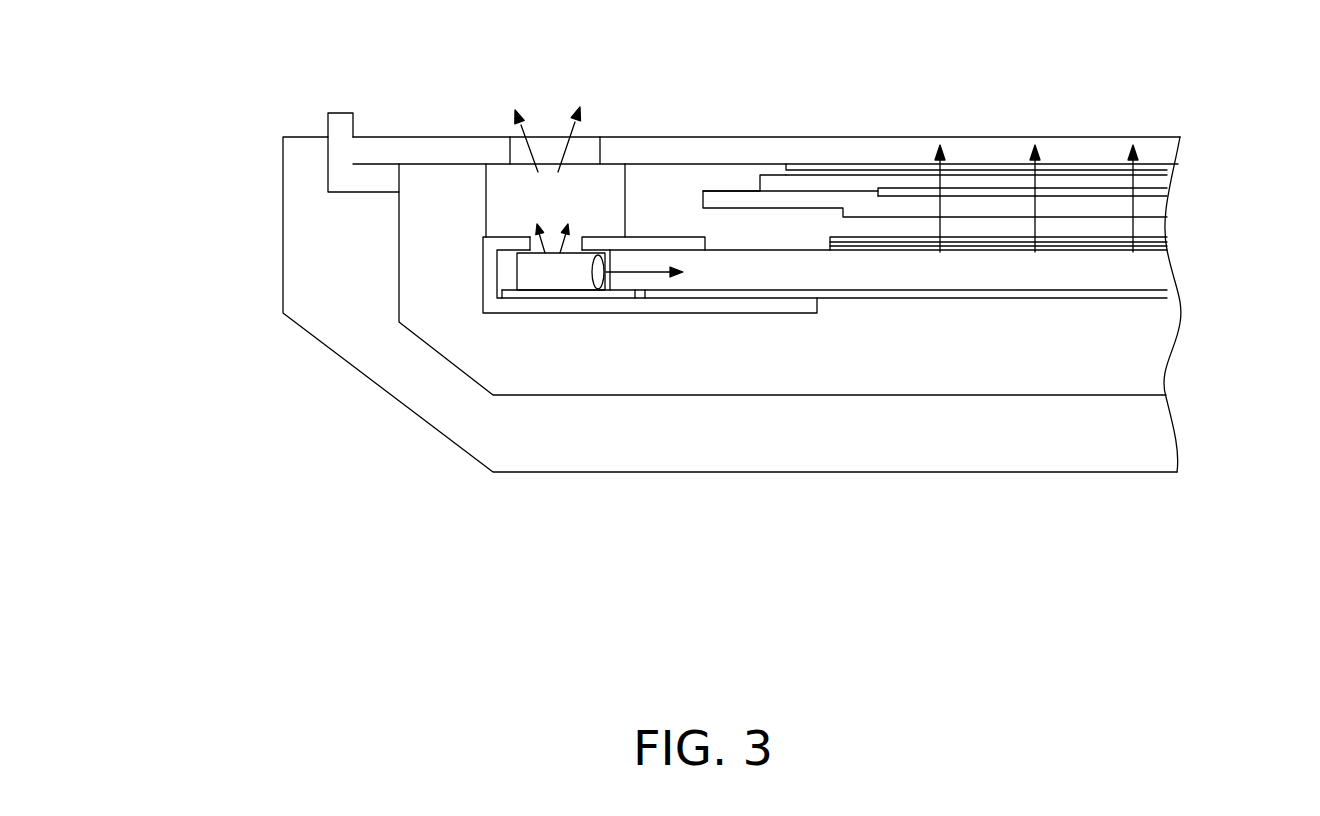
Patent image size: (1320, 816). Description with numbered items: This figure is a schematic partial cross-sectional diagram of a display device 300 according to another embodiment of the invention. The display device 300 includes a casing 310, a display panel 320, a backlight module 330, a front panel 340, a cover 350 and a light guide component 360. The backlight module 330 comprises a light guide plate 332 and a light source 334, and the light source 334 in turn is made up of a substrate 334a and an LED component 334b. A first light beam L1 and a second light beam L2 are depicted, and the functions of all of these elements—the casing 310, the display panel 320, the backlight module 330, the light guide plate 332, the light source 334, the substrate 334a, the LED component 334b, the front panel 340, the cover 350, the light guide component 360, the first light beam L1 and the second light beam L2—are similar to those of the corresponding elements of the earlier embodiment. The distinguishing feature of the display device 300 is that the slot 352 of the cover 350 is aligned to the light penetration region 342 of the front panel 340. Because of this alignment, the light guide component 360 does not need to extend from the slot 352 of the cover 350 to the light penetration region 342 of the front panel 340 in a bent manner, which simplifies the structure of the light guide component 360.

The display device 300 is at (1293, 573).
The casing 310 is at (335, 313).
The display panel 320 is at (730, 203).
The backlight module 330 is at (821, 412).
The light guide plate 332 is at (842, 277).
The light source 334 is at (603, 396).
The substrate 334a is at (562, 295).
The LED component 334b is at (527, 275).
The front panel 340 is at (1085, 143).
The light penetration region 342 is at (553, 145).
The cover 350 is at (488, 263).
The slot 352 is at (591, 242).
The light guide component 360 is at (618, 188).
The first light beam L1 is at (664, 267).
The second light beam L2 is at (535, 228).